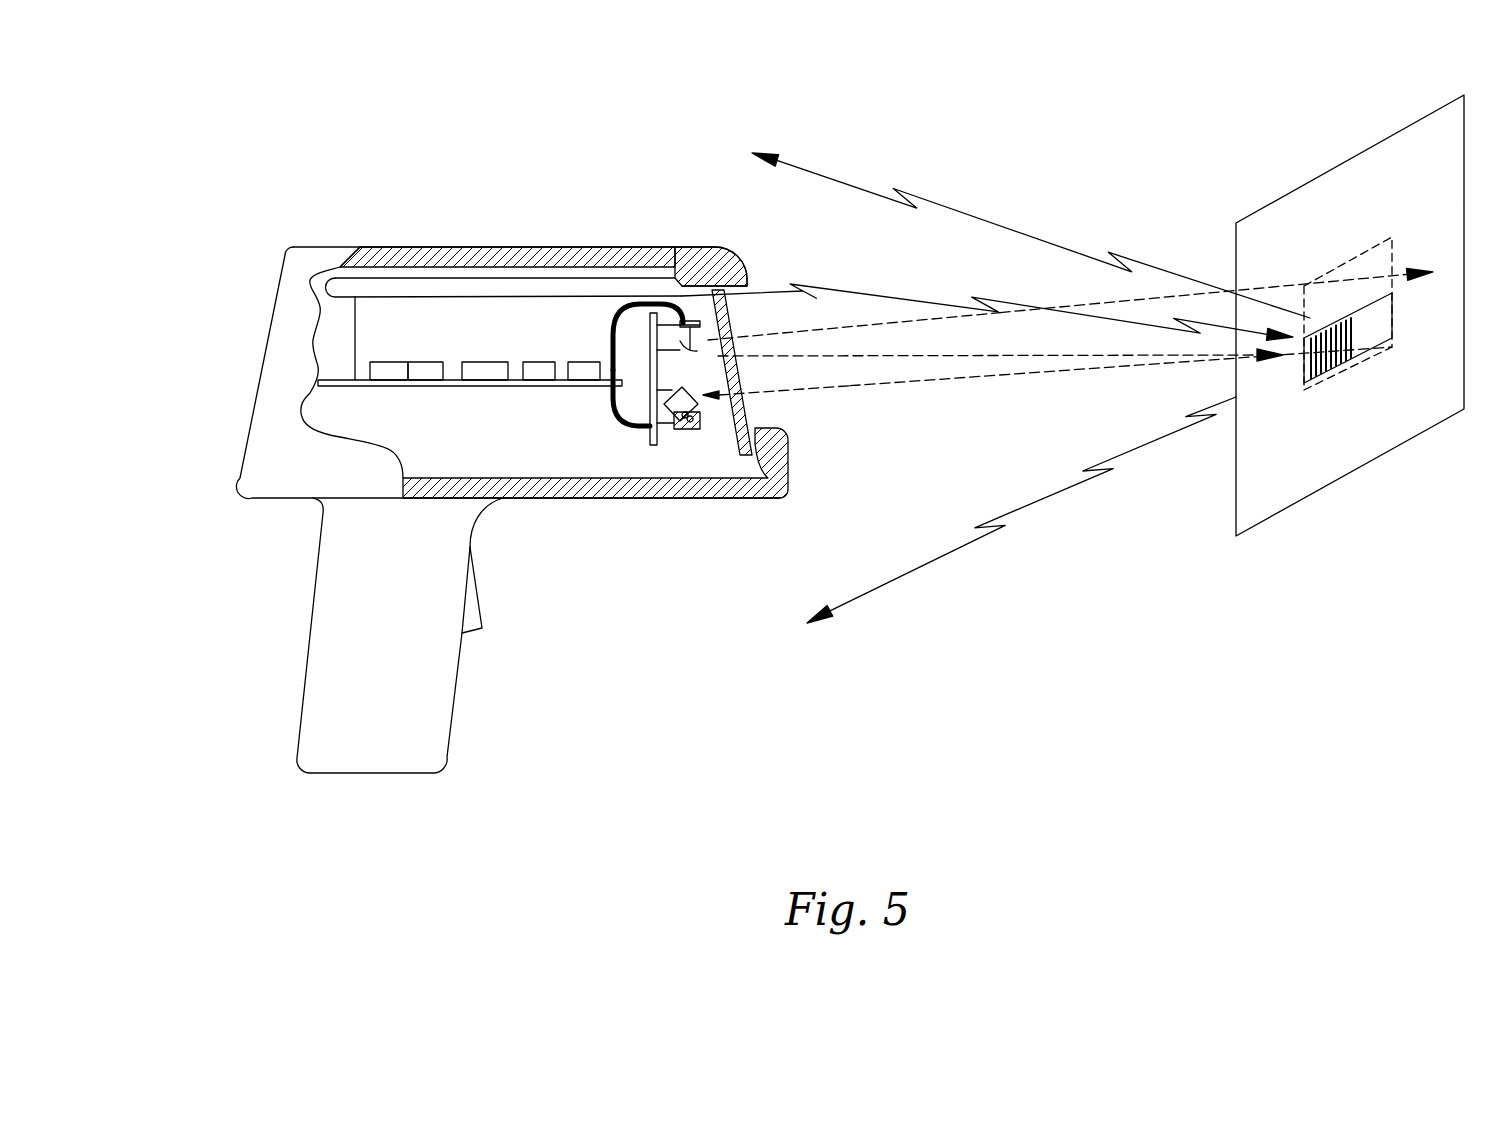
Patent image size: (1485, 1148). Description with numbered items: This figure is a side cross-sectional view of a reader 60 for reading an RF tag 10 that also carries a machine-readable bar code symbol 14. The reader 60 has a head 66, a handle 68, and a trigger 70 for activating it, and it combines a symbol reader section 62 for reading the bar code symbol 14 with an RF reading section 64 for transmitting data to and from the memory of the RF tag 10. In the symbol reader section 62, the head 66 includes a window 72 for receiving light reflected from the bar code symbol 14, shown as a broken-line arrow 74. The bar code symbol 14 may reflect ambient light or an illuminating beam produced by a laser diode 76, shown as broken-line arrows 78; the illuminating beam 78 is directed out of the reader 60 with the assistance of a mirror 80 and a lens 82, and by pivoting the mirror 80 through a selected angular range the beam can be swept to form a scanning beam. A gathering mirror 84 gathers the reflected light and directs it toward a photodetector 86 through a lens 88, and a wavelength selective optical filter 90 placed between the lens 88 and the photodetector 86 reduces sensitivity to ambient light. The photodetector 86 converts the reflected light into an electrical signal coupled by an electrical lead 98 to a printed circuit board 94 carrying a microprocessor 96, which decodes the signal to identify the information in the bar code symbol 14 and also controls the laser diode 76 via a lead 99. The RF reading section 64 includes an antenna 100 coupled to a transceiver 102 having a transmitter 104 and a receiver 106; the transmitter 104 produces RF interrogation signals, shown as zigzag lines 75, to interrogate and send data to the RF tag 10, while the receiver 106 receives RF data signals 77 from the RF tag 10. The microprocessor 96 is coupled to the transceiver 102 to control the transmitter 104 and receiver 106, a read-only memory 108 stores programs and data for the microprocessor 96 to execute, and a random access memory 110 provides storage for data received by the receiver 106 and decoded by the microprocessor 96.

The RF tag 10 is at (1360, 352).
The bar code symbol 14 is at (1326, 327).
The reader 60 is at (217, 523).
The symbol reader section 62 is at (740, 477).
The RF reading section 64 is at (628, 253).
The head 66 is at (487, 247).
The handle 68 is at (315, 693).
The trigger 70 is at (480, 605).
The window 72 is at (748, 400).
The reflected light 74 is at (855, 387).
The RF interrogation signals 75 is at (899, 291).
The laser diode 76 is at (730, 318).
The RF data signals 77 is at (842, 178).
The illuminating beam 78 is at (1136, 297).
The mirror 80 is at (689, 352).
The lens 82 is at (710, 338).
The gathering mirror 84 is at (647, 435).
The photodetector 86 is at (700, 430).
The lens 88 is at (673, 428).
The wavelength selective optical filter 90 is at (698, 404).
The printed circuit board 94 is at (448, 388).
The microprocessor 96 is at (492, 362).
The electrical lead 98 is at (608, 408).
The lead 99 is at (622, 306).
The antenna 100 is at (412, 277).
The transceiver 102 is at (364, 327).
The transmitter 104 is at (391, 362).
The receiver 106 is at (442, 362).
The read-only memory 108 is at (547, 362).
The random access memory 110 is at (589, 362).